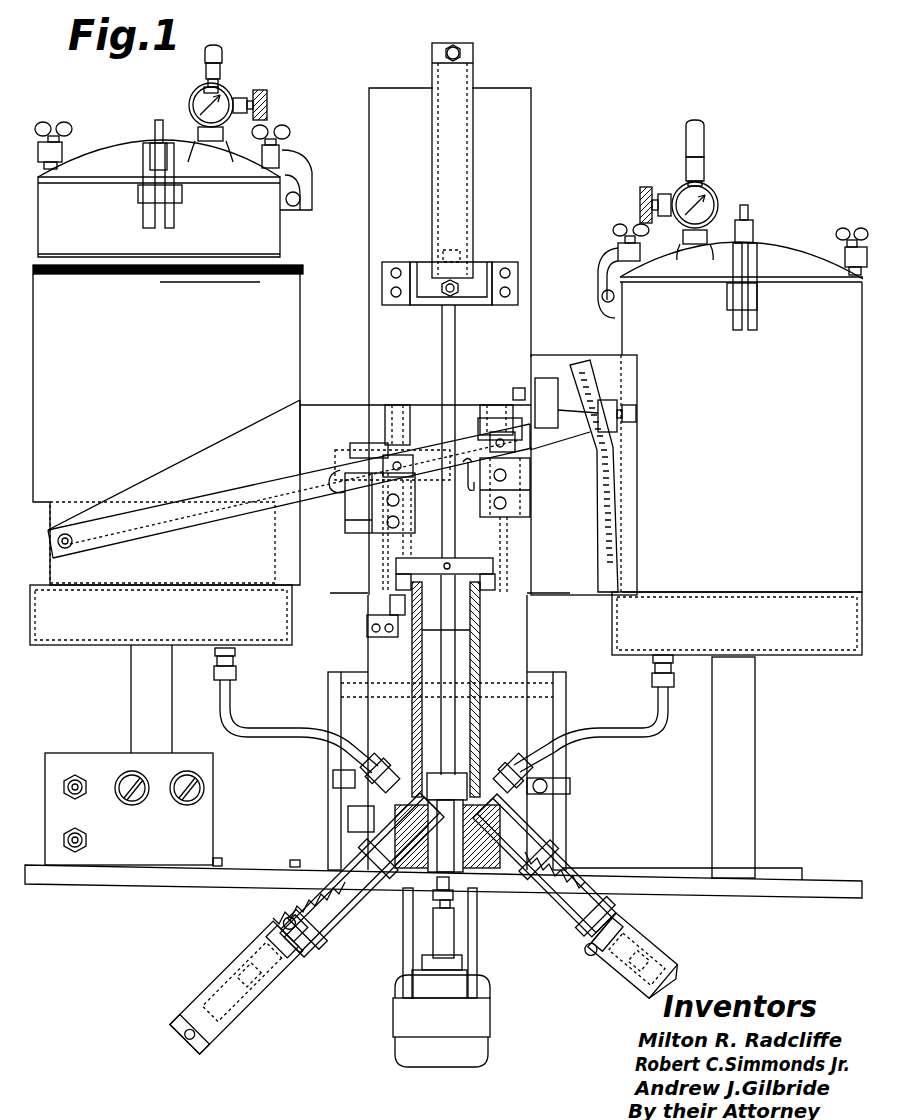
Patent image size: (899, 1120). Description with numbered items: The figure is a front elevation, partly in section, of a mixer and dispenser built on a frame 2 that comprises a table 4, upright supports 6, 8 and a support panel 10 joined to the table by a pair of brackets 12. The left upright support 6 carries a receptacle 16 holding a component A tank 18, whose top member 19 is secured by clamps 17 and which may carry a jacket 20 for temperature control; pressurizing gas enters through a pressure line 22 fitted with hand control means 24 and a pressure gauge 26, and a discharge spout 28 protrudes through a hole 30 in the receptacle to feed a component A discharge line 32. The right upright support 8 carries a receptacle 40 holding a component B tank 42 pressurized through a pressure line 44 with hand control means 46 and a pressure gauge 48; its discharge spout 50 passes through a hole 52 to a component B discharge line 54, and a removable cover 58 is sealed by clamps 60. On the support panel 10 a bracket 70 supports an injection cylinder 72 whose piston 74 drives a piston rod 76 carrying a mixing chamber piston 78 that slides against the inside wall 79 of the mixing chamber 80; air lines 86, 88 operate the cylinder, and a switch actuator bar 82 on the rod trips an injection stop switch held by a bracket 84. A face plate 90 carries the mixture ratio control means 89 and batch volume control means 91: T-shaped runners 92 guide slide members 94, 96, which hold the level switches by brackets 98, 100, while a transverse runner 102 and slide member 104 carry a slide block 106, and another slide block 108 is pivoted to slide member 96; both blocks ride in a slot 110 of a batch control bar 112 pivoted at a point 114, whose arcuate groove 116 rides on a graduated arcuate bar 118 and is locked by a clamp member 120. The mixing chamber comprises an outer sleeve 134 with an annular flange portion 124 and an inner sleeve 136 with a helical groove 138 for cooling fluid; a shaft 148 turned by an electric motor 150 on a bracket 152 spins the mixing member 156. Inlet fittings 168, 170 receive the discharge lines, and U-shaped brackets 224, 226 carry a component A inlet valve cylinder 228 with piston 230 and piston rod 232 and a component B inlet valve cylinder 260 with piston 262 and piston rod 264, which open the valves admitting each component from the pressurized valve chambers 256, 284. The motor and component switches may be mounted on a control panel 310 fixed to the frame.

The frame 2 is at (112, 892).
The table 4 is at (220, 892).
The upright support 6 is at (136, 698).
The upright support 8 is at (748, 735).
The support panel 10 is at (532, 167).
The brackets 12 is at (350, 790).
The receptacle 16 is at (50, 625).
The clamps 17 is at (160, 192).
The tank 18 is at (280, 244).
The top member 19 is at (100, 154).
The jacket 20 is at (300, 346).
The pressure line 22 is at (224, 50).
The hand control means 24 is at (268, 103).
The pressure gauge 26 is at (232, 90).
The discharge spout 28 is at (238, 657).
The hole 30 is at (222, 648).
The component A discharge line 32 is at (262, 732).
The receptacle 40 is at (737, 623).
The tank 42 is at (741, 434).
The pressure line 44 is at (705, 145).
The hand control means 46 is at (640, 202).
The pressure gauge 48 is at (718, 195).
The discharge spout 50 is at (655, 666).
The hole 52 is at (660, 654).
The component B discharge line 54 is at (612, 738).
The removable cover 58 is at (778, 250).
The clamps 60 is at (845, 228).
The bracket 70 is at (520, 285).
The injection cylinder 72 is at (476, 82).
The piston 74 is at (470, 264).
The piston rod 76 is at (457, 352).
The mixing chamber piston 78 is at (468, 775).
The inside wall 79 is at (505, 595).
The mixing chamber 80 is at (486, 678).
The switch actuator bar 82 is at (490, 558).
The bracket 84 is at (367, 628).
The air line 86 is at (462, 46).
The air line 88 is at (445, 298).
The mixture ratio control means 89 is at (426, 398).
The face plate 90 is at (298, 398).
The batch volume control means 91 is at (538, 554).
The T-shaped runners 92 is at (397, 410).
The slide member 94 is at (385, 410).
The slide member 96 is at (488, 416).
The bracket 98 is at (378, 533).
The bracket 100 is at (532, 505).
The T-shaped runner 102 is at (345, 456).
The slide member 104 is at (360, 442).
The slide block 106 is at (402, 462).
The slide block 108 is at (512, 446).
The slot 110 is at (476, 485).
The batch control bar 112 is at (228, 492).
The pivot point 114 is at (78, 527).
The arcuate groove 116 is at (564, 453).
The arcuate bar 118 is at (602, 528).
The clamp member 120 is at (637, 410).
The annular flange portion 124 is at (385, 778).
The outer sleeve 134 is at (412, 664).
The inner sleeve 136 is at (440, 628).
The helical groove 138 is at (428, 650).
The shaft 148 is at (452, 880).
The electric motor 150 is at (490, 998).
The bracket 152 is at (478, 946).
The mixing member 156 is at (430, 765).
The inlet fitting 168 is at (360, 773).
The inlet fitting 170 is at (502, 772).
The U-shaped bracket 224 is at (350, 905).
The U-shaped bracket 226 is at (548, 922).
The component A mixing chamber inlet valve cylinder 228 is at (236, 1012).
The piston 230 is at (268, 975).
The piston rod 232 is at (322, 918).
The component A mixing chamber inlet valve chamber 256 is at (360, 810).
The component B mixing chamber inlet valve cylinder 260 is at (620, 998).
The piston 262 is at (640, 950).
The piston rod 264 is at (595, 950).
The component B inlet valve chamber 284 is at (560, 815).
The control panel 310 is at (60, 792).